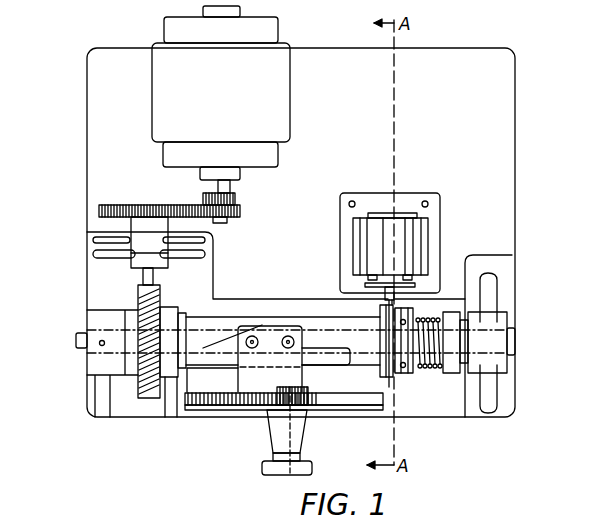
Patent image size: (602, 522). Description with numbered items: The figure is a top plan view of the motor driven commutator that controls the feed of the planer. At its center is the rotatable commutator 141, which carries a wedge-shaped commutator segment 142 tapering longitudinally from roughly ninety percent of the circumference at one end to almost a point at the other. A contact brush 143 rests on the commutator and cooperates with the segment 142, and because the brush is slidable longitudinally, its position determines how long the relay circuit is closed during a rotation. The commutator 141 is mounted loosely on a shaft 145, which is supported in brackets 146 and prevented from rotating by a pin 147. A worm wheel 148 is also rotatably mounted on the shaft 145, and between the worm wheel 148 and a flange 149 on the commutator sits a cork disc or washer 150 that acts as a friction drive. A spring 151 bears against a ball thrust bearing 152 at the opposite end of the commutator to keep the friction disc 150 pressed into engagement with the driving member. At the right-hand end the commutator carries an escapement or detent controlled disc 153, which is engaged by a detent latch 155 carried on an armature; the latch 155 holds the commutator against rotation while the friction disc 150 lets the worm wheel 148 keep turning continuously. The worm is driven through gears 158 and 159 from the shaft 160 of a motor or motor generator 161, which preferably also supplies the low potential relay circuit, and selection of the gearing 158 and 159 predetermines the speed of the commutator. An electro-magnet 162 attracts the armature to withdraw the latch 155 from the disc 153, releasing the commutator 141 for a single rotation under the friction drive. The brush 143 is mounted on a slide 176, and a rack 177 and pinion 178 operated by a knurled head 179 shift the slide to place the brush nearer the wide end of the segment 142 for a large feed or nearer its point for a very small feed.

The rotatable commutator 141 is at (207, 337).
The wedge-shaped commutator segment 142 is at (317, 338).
The contact brush 143 is at (280, 333).
The shaft 145 is at (78, 333).
The brackets 146 is at (495, 320).
The pin 147 is at (100, 345).
The worm wheel 148 is at (140, 395).
The flange 149 is at (172, 380).
The cork disc or washer 150 is at (157, 398).
The spring 151 is at (450, 298).
The ball thrust bearing 152 is at (418, 373).
The escapement or detent controlled disc 153 is at (405, 377).
The detent latch 155 is at (425, 312).
The gear 158 is at (108, 205).
The gear 159 is at (242, 210).
The motor shaft 160 is at (218, 187).
The motor or motor generator 161 is at (270, 88).
The electro-magnet 162 is at (400, 225).
The slide 176 is at (327, 411).
The rack 177 is at (240, 407).
The pinion 178 is at (300, 390).
The knurled head 179 is at (275, 476).